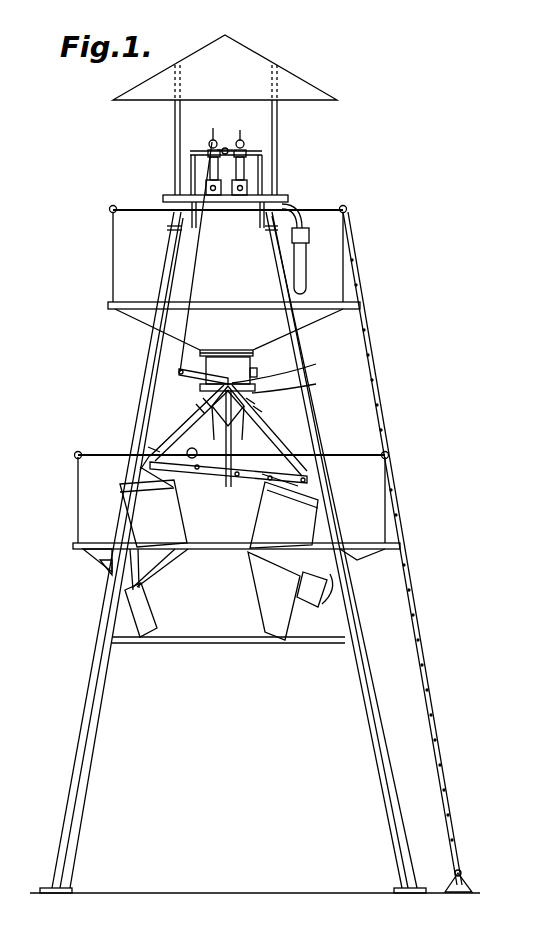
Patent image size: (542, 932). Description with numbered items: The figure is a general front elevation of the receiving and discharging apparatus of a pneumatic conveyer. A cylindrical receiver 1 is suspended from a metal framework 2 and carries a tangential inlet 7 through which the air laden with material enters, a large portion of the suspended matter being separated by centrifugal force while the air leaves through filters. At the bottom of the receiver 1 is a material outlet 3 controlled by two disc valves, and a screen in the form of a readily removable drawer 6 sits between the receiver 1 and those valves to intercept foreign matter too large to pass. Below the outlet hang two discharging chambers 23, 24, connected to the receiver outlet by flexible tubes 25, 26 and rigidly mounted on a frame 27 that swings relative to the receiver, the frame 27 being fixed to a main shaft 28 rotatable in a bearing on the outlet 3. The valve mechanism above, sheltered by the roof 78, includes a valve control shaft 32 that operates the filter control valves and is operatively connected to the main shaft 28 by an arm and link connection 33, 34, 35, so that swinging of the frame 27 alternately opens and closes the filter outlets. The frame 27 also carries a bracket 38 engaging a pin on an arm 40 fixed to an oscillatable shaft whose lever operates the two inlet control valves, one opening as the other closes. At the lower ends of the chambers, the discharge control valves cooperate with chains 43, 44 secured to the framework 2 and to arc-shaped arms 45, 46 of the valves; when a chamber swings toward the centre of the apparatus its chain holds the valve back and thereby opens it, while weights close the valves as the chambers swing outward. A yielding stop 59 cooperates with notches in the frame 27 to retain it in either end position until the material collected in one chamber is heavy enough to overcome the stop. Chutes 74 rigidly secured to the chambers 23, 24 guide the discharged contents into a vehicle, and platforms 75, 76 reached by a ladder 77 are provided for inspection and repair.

The cylindrical receiver 1 is at (258, 292).
The metal framework 2 is at (177, 240).
The material outlet 3 is at (200, 357).
The removable drawer 6 is at (250, 374).
The tangential inlet 7 is at (292, 207).
The discharging chamber 23 is at (154, 528).
The discharging chamber 24 is at (284, 511).
The flexible tube 25 is at (160, 448).
The flexible tube 26 is at (244, 420).
The frame 27 is at (196, 416).
The main shaft 28 is at (285, 366).
The valve control shaft 32 is at (228, 150).
The arm and link connection 33 is at (214, 150).
The arm and link connection 34 is at (193, 266).
The arm and link connection 35 is at (178, 377).
The bracket 38 is at (295, 382).
The arm 40 is at (248, 412).
The chain 43 is at (108, 568).
The chain 44 is at (356, 562).
The arc-shaped arm 45 is at (108, 575).
The arc-shaped arm 46 is at (330, 582).
The yielding stop 59 is at (231, 478).
The chute 74 is at (150, 620).
The platform 75 is at (82, 545).
The platform 76 is at (112, 304).
The ladder 77 is at (380, 397).
The roof 78 is at (268, 62).